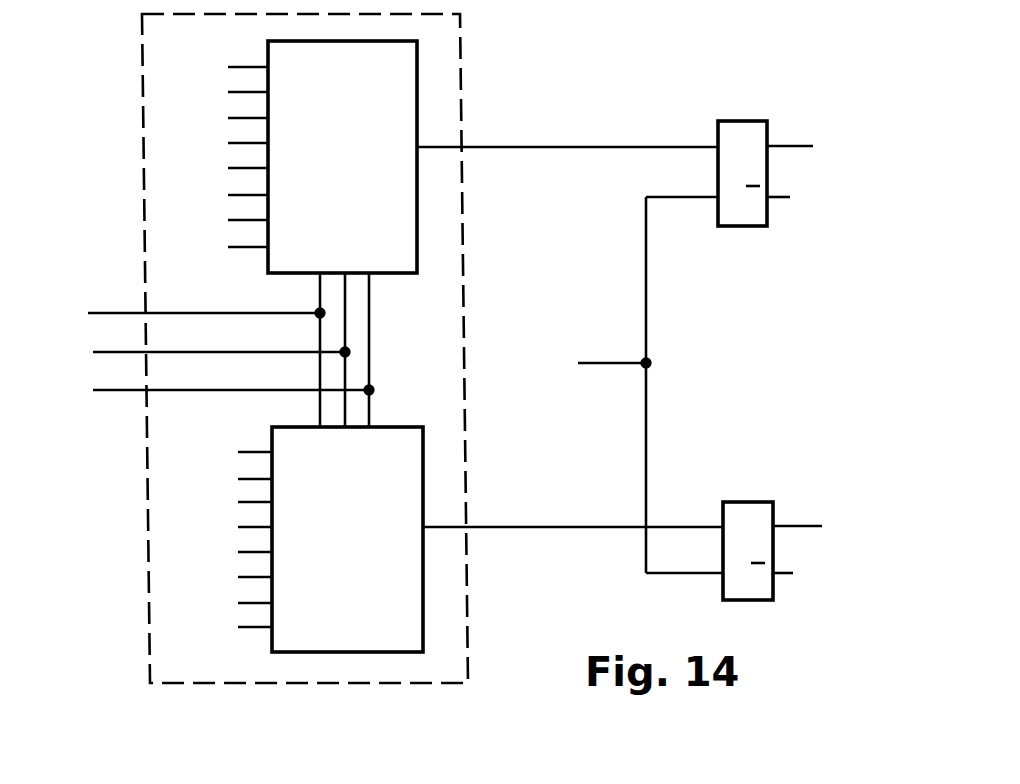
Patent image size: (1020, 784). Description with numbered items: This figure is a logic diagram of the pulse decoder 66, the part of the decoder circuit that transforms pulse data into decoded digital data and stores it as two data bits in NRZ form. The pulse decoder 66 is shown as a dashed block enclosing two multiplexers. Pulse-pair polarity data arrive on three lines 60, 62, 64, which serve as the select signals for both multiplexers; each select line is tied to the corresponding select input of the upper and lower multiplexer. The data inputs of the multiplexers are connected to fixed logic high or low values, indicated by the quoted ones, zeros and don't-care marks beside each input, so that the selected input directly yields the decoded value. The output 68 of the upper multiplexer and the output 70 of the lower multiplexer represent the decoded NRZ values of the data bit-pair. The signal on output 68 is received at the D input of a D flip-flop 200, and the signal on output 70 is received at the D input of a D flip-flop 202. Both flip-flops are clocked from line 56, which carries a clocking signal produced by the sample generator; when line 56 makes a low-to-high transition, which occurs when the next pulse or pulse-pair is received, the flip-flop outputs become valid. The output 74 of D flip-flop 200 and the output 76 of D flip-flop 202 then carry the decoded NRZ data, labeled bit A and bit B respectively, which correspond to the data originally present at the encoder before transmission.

The pulse decoder 66 is at (142, 68).
The line 60 is at (115, 312).
The line 62 is at (125, 353).
The line 64 is at (132, 392).
The output 68 is at (543, 147).
The output 70 is at (548, 527).
The line 56 is at (618, 367).
The D flip-flop 200 is at (745, 226).
The D flip-flop 202 is at (752, 502).
The output 74 is at (795, 142).
The output 76 is at (798, 526).